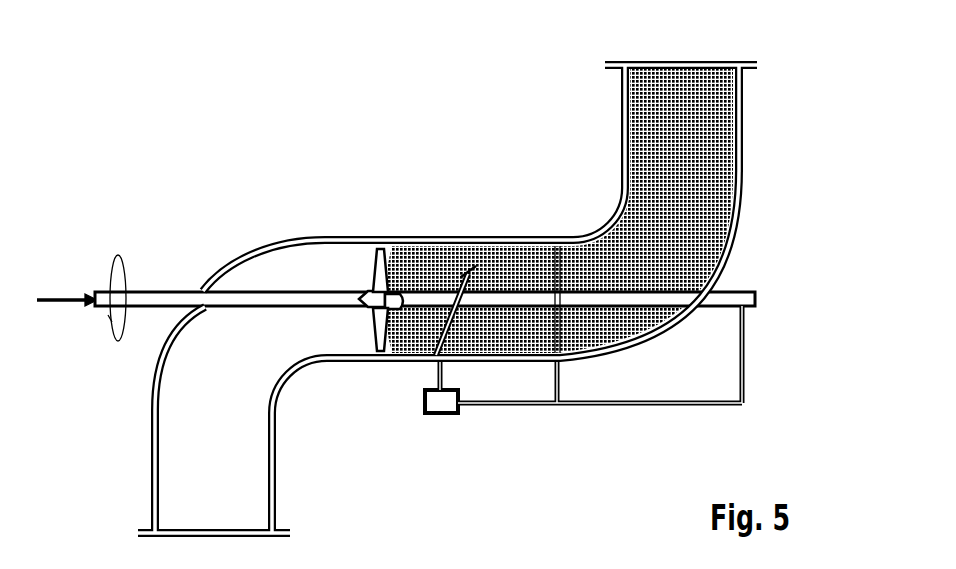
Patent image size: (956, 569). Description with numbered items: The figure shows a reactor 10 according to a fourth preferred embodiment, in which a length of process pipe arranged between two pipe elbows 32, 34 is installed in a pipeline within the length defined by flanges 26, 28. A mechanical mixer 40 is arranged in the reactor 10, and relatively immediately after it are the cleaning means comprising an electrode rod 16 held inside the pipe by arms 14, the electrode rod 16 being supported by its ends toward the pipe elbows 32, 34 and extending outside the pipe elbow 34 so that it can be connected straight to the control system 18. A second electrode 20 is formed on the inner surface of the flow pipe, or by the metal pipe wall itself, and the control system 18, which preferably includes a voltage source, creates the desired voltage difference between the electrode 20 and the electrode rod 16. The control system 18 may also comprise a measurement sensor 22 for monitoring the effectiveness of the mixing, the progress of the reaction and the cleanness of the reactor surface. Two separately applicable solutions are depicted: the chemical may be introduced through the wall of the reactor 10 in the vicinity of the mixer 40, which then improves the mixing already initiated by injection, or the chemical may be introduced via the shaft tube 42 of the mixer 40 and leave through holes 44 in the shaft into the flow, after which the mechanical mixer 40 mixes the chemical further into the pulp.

The reactor 10 is at (446, 182).
The arms 14 is at (433, 290).
The electrode rod 16 is at (527, 287).
The control system 18 is at (435, 405).
The electrode 20 is at (443, 363).
The measurement sensor 22 is at (560, 362).
The flange 26 is at (296, 521).
The flange 28 is at (617, 70).
The pipe elbow 32 is at (190, 231).
The pipe elbow 34 is at (575, 195).
The mechanical mixer 40 is at (372, 252).
The shaft tube 42 is at (100, 290).
The holes 44 is at (362, 297).